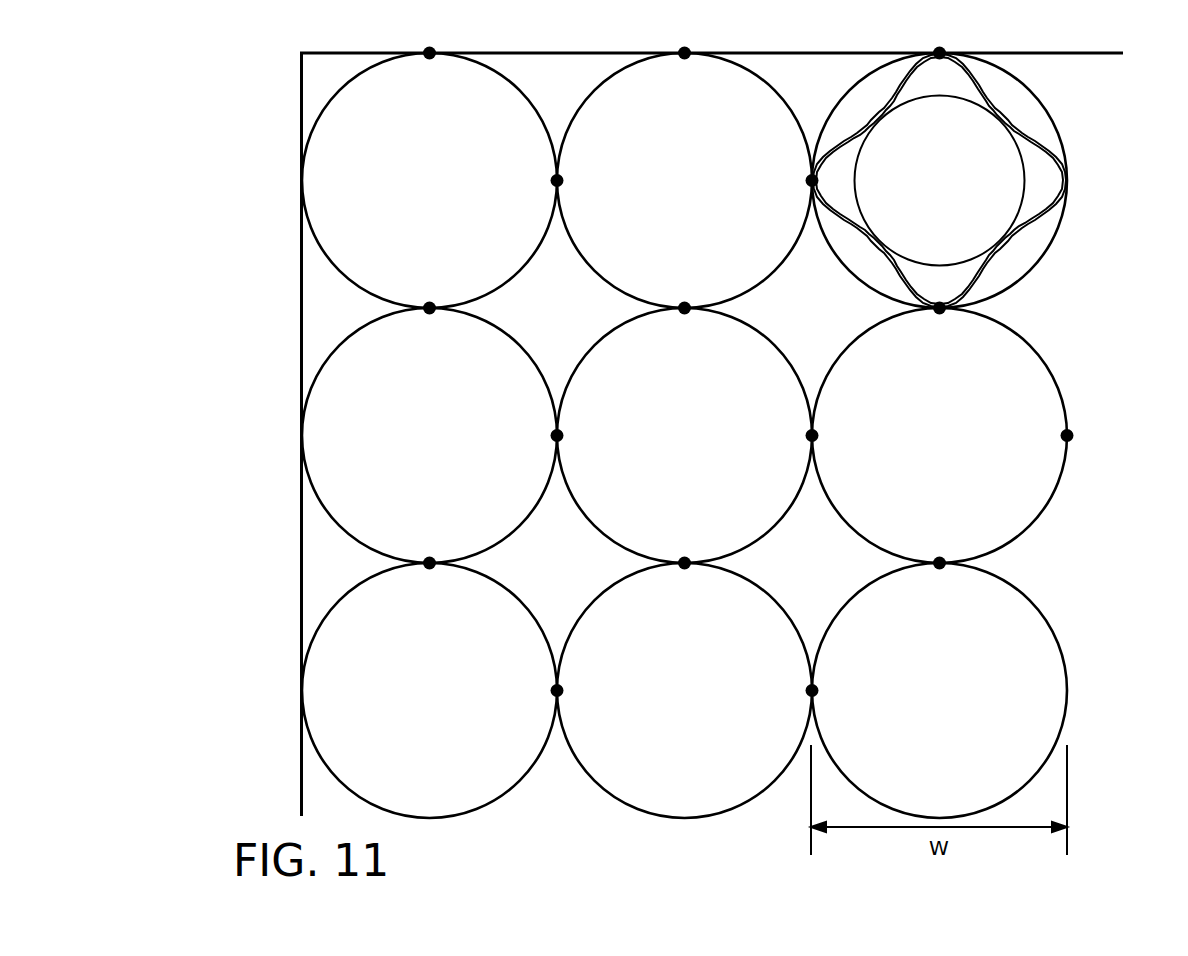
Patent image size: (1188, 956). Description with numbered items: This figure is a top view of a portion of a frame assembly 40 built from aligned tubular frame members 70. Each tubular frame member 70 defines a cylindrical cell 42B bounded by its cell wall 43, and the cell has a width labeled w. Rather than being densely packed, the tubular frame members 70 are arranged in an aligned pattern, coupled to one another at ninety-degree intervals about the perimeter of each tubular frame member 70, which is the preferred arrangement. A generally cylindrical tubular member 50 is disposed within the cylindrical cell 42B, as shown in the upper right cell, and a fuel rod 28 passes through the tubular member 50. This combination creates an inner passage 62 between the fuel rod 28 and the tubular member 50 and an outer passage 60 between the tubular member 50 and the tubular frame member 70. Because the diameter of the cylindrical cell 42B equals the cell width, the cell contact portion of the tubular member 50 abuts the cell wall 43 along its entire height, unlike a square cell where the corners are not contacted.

The frame assembly 40 is at (842, 53).
The tubular frame member 70 is at (517, 87).
The cell wall 43 is at (611, 284).
The cylindrical cell 42B is at (332, 173).
The outer passage 60 is at (872, 110).
The inner passage 62 is at (854, 203).
The tubular member 50 is at (1047, 140).
The fuel rod 28 is at (1008, 186).